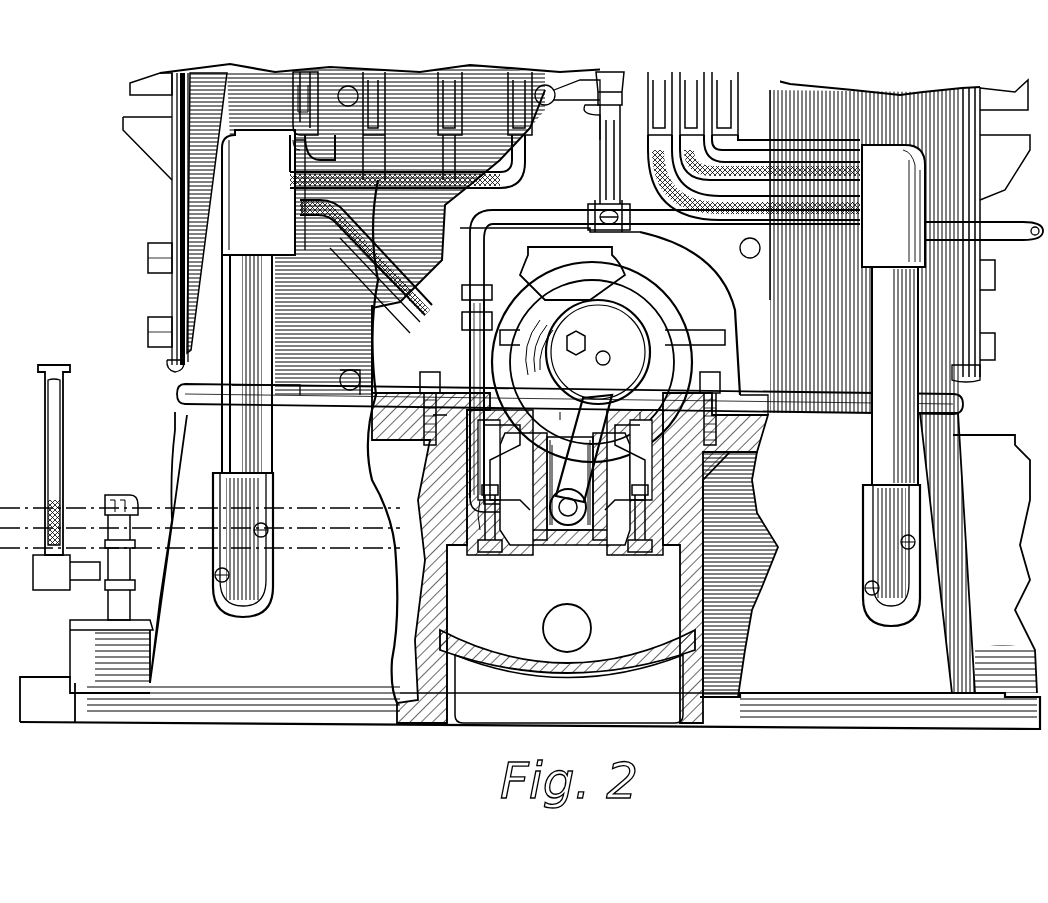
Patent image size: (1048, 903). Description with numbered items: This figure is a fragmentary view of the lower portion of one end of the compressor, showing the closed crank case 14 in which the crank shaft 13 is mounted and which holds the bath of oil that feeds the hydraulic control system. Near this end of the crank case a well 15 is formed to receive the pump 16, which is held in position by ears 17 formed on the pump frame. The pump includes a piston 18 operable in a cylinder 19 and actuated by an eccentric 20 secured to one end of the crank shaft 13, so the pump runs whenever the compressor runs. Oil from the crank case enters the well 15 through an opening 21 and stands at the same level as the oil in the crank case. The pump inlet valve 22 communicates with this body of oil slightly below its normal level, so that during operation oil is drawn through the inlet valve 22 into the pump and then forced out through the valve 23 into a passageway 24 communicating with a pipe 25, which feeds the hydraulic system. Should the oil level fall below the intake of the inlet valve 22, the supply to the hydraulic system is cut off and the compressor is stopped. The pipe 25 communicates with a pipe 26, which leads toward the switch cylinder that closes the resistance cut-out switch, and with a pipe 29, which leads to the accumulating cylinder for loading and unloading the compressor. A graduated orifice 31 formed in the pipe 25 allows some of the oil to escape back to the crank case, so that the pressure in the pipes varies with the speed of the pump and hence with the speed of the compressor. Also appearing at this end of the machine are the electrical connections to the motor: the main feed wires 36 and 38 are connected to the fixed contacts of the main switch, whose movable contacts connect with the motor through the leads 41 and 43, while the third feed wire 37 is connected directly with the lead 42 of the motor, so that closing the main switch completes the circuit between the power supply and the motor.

The crank shaft 13 is at (662, 612).
The crank case 14 is at (880, 388).
The well 15 is at (560, 312).
The pump 16 is at (598, 470).
The ears 17 is at (440, 378).
The piston 18 is at (568, 525).
The cylinder 19 is at (545, 470).
The eccentric 20 is at (625, 330).
The opening 21 is at (548, 624).
The pump inlet valve 22 is at (635, 553).
The valve 23 is at (485, 553).
The passageway 24 is at (470, 478).
The pipe 25 is at (470, 340).
The pipe 26 is at (604, 135).
The pipe 29 is at (715, 240).
The graduated orifice 31 is at (598, 212).
The main feed wire 36 is at (345, 132).
The third feed wire 37 is at (448, 292).
The main feed wire 38 is at (510, 160).
The lead 41 is at (294, 158).
The lead 42 is at (330, 220).
The lead 43 is at (300, 192).